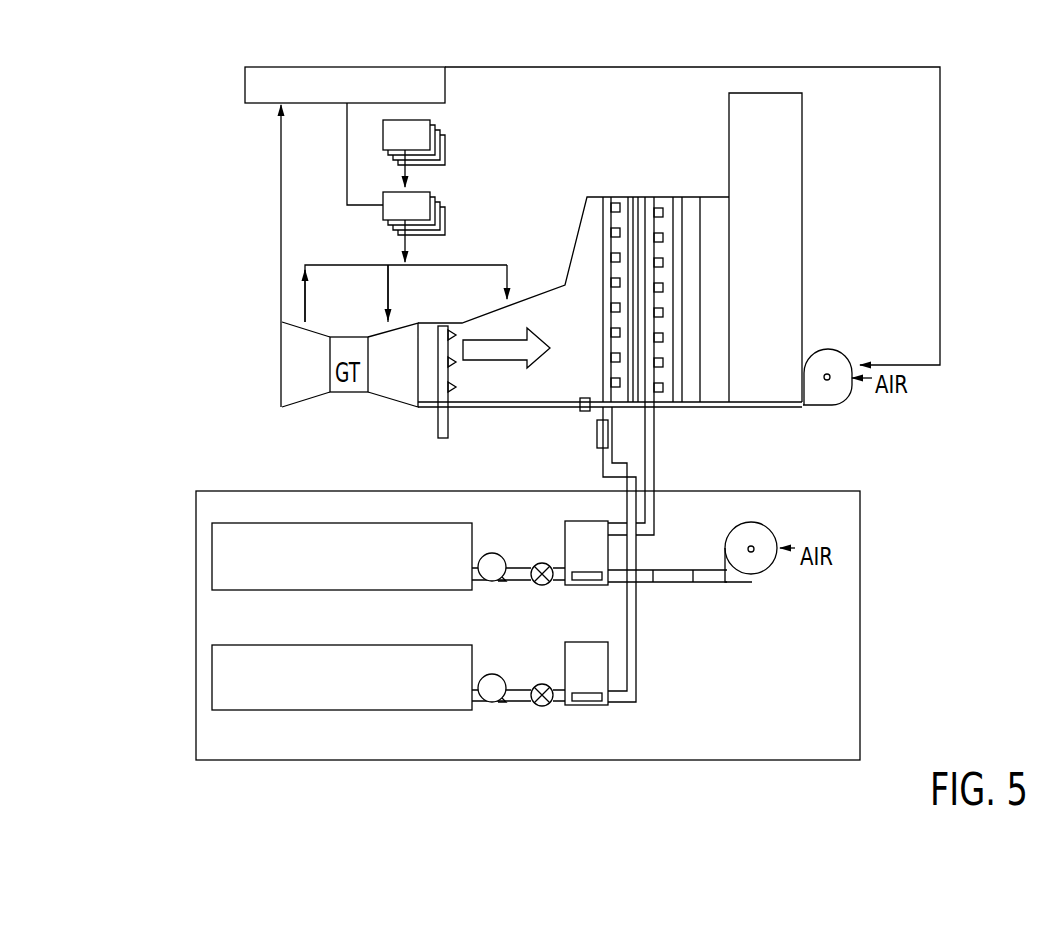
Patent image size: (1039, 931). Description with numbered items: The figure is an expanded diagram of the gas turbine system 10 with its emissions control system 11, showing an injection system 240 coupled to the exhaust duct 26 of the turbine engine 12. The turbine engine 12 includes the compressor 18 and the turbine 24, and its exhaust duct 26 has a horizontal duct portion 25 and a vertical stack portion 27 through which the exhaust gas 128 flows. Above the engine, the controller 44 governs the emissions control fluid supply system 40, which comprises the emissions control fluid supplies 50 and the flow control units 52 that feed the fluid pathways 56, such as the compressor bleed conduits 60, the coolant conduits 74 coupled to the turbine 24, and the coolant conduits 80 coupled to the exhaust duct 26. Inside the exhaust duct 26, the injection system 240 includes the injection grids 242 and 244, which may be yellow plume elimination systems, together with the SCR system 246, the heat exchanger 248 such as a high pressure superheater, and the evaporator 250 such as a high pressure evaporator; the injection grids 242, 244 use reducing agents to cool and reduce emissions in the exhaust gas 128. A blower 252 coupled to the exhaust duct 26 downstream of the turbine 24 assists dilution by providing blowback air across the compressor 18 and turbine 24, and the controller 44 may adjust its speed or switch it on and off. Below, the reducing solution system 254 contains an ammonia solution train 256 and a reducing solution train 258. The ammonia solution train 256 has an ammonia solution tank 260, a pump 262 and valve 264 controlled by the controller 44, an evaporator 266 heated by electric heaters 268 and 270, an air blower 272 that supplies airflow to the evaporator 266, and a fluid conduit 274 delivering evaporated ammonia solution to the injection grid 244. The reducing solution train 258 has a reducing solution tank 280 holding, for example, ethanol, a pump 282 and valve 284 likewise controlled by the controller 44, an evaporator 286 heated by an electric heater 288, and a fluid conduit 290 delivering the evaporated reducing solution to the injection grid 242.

The gas turbine system 10 is at (227, 168).
The emissions control system 11 is at (227, 258).
The turbine engine 12 is at (227, 345).
The compressor 18 is at (303, 385).
The turbine 24 is at (394, 403).
The horizontal duct portion 25 is at (565, 384).
The exhaust duct 26 is at (473, 407).
The vertical stack portion 27 is at (803, 116).
The emissions control fluid supply system 40 is at (334, 192).
The controller 44 is at (434, 97).
The emissions control fluid supplies 50 is at (448, 150).
The flow control units 52 is at (448, 223).
The fluid pathways 56 is at (440, 265).
The compressor bleed conduits 60 is at (311, 302).
The coolant conduits 74 is at (391, 300).
The coolant conduits 80 is at (508, 283).
The exhaust gas 128 is at (477, 360).
The injection system 240 is at (602, 52).
The injection grid 242 is at (612, 195).
The injection grid 244 is at (654, 195).
The SCR system 246 is at (714, 195).
The heat exchanger 248 is at (633, 195).
The evaporator 250 is at (680, 406).
The blower 252 is at (842, 347).
The reducing solution system 254 is at (194, 496).
The ammonia solution train 256 is at (416, 520).
The reducing solution train 258 is at (372, 632).
The ammonia solution tank 260 is at (391, 591).
The pump 262 is at (494, 553).
The valve 264 is at (539, 586).
The evaporator 266 is at (587, 520).
The electric heater 268 is at (586, 586).
The electric heater 270 is at (661, 583).
The air blower 272 is at (774, 577).
The fluid conduit 274 is at (658, 517).
The reducing solution tank 280 is at (290, 711).
The pump 282 is at (493, 702).
The valve 284 is at (543, 707).
The evaporator 286 is at (565, 663).
The electric heater 288 is at (592, 705).
The fluid conduit 290 is at (640, 660).